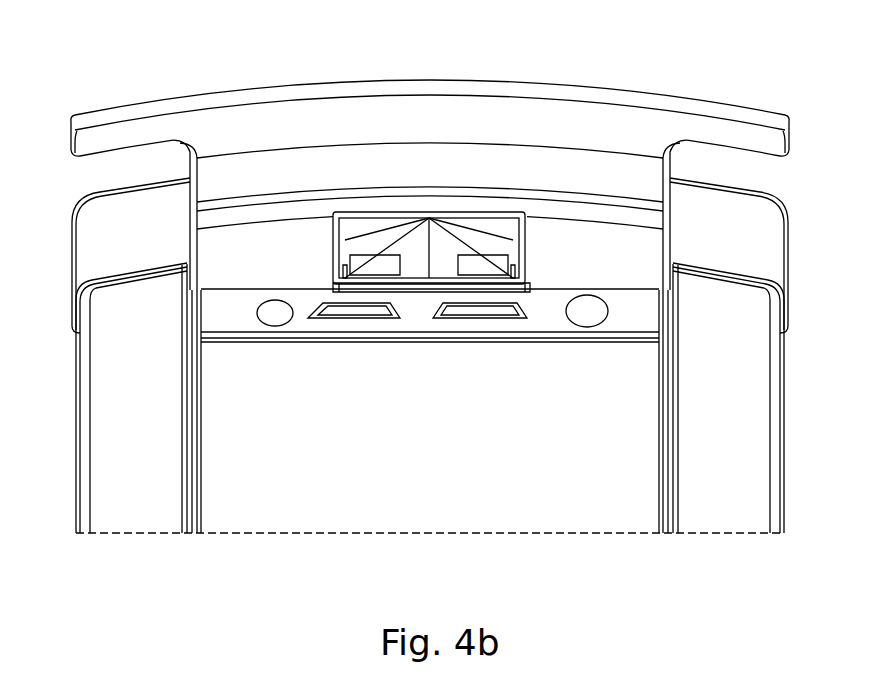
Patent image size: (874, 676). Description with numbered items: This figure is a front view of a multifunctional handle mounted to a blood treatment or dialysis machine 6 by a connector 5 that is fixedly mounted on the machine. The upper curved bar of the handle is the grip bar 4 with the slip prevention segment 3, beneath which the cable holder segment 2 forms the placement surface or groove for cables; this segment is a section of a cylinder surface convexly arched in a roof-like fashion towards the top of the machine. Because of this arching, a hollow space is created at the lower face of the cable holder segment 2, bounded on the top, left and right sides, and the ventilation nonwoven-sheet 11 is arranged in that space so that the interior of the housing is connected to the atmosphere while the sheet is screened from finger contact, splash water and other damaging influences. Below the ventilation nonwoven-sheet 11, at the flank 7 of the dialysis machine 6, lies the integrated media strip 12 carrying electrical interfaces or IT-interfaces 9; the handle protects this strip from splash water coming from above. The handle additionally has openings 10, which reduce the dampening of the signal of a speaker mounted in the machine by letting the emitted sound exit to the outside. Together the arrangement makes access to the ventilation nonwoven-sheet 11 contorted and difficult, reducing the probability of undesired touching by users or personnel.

The cable holder segment 2 is at (210, 277).
The slip prevention segment 3 is at (618, 175).
The grip bar 4 is at (370, 90).
The connector 5 is at (105, 216).
The dialysis machine 6 is at (105, 418).
The flank 7 is at (494, 495).
The electrical interfaces or IT-interfaces 9 is at (275, 316).
The openings 10 is at (355, 318).
The ventilation nonwoven-sheet 11 is at (433, 265).
The media strip 12 is at (655, 312).